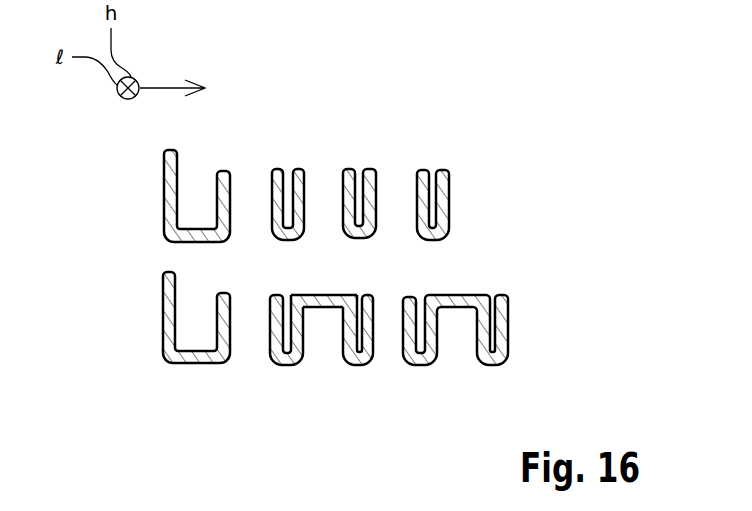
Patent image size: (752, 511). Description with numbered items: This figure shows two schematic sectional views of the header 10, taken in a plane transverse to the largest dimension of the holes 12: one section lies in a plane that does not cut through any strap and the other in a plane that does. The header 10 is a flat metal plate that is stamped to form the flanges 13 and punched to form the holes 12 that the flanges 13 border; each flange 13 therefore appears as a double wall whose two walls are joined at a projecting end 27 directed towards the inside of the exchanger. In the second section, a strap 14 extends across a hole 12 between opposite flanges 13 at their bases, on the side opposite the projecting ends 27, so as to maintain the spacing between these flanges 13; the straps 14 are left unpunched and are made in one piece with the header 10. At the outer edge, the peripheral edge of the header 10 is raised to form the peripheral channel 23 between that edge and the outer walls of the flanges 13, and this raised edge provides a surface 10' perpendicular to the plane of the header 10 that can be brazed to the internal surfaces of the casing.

The header 10 is at (493, 204).
The surface 10' is at (146, 254).
The hole 12 is at (317, 185).
The flange 13 is at (452, 202).
The strap 14 is at (304, 360).
The peripheral channel 23 is at (193, 183).
The projecting end 27 is at (282, 242).